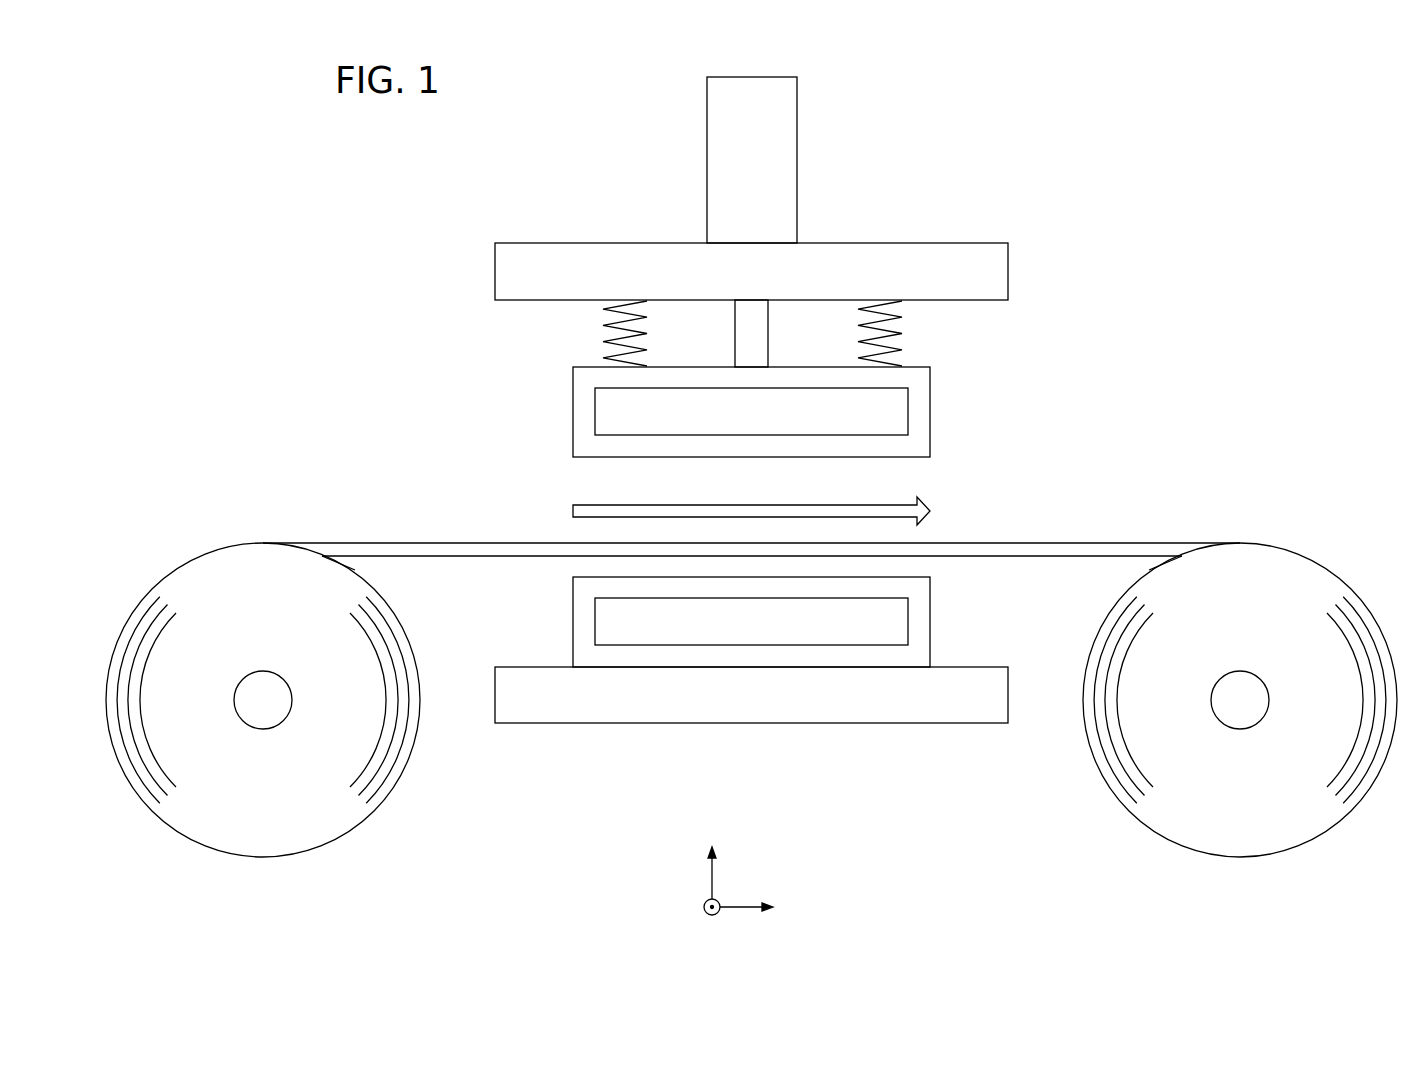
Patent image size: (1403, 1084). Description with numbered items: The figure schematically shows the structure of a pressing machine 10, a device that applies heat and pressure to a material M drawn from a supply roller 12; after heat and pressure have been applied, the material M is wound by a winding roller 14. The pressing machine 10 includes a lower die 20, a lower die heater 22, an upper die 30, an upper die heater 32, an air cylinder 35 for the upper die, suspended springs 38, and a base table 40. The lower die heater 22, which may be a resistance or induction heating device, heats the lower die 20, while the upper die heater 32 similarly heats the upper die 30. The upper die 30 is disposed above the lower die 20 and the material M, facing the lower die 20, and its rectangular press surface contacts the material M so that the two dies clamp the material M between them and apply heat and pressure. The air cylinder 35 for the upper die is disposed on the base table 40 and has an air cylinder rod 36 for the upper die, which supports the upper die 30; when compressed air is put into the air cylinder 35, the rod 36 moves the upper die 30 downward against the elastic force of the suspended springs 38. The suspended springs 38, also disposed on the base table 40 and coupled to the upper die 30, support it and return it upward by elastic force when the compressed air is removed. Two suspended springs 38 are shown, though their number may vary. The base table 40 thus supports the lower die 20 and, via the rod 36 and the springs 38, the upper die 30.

The pressing machine 10 is at (1116, 142).
The supply roller 12 is at (184, 562).
The winding roller 14 is at (1320, 564).
The material M is at (1037, 542).
The lower die 20 is at (575, 594).
The lower die heater 22 is at (597, 628).
The upper die 30 is at (575, 382).
The upper die heater 32 is at (597, 414).
The air cylinder for the upper die 35 is at (713, 157).
The air cylinder rod for the upper die 36 is at (741, 334).
The suspended spring 38 is at (605, 334).
The base table 40 is at (500, 271).